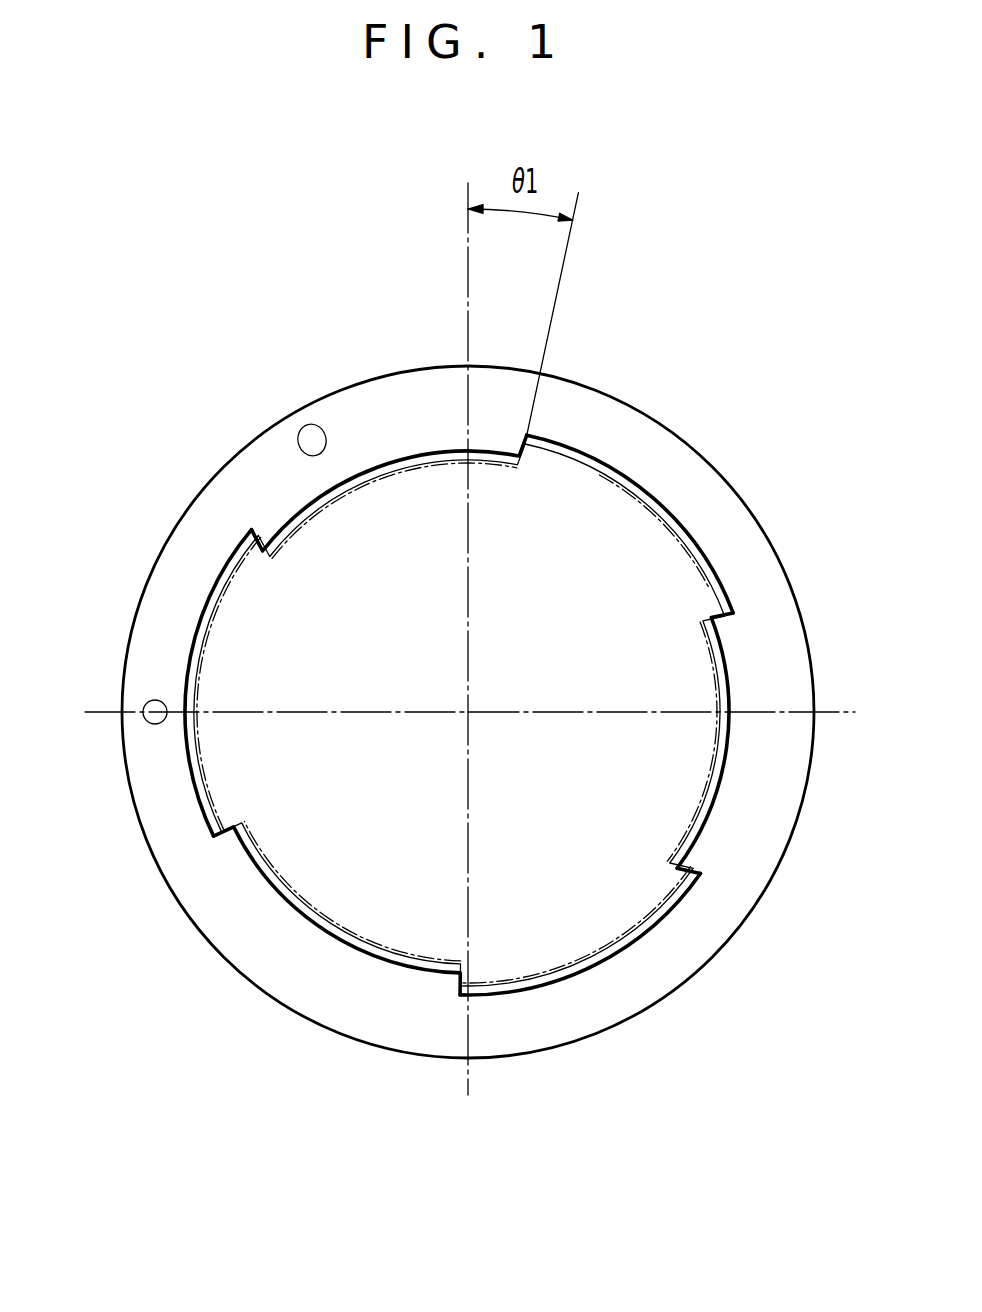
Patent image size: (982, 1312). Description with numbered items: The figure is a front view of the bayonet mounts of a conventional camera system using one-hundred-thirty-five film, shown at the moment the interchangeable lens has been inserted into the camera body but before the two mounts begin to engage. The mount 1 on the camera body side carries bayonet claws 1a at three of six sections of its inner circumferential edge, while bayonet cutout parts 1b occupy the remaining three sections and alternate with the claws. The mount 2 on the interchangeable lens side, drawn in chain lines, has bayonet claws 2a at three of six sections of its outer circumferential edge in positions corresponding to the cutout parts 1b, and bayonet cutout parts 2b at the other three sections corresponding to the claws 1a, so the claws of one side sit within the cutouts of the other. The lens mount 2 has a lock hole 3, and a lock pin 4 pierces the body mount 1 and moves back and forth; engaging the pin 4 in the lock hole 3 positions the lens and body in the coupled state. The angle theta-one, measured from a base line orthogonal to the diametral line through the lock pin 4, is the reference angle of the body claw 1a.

The mount 1 is at (647, 442).
The bayonet claws 1a is at (367, 343).
The bayonet cutout parts 1b is at (103, 573).
The mount 2 is at (200, 430).
The bayonet claws 2a is at (87, 793).
The bayonet cutout parts 2b is at (300, 1083).
The lock hole 3 is at (310, 424).
The lock pin 4 is at (144, 702).